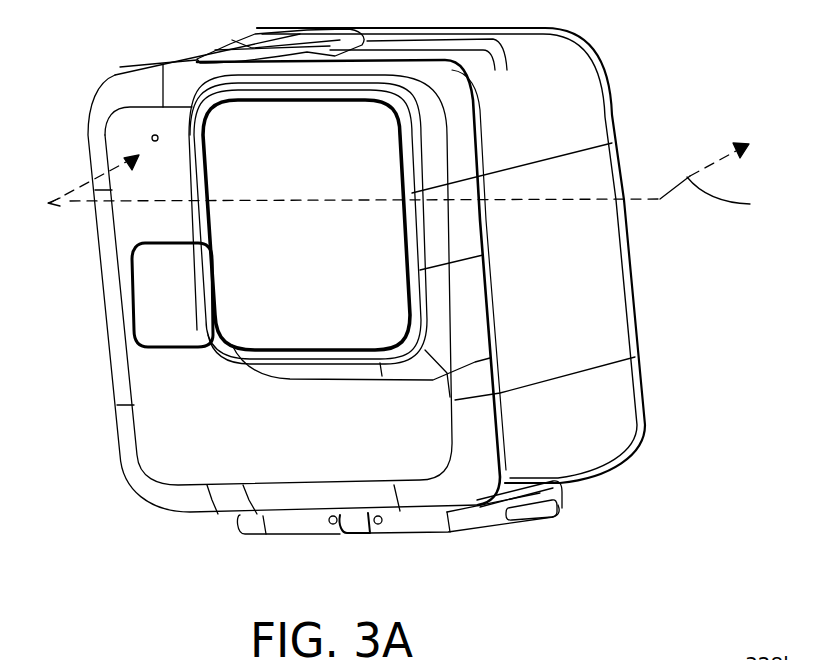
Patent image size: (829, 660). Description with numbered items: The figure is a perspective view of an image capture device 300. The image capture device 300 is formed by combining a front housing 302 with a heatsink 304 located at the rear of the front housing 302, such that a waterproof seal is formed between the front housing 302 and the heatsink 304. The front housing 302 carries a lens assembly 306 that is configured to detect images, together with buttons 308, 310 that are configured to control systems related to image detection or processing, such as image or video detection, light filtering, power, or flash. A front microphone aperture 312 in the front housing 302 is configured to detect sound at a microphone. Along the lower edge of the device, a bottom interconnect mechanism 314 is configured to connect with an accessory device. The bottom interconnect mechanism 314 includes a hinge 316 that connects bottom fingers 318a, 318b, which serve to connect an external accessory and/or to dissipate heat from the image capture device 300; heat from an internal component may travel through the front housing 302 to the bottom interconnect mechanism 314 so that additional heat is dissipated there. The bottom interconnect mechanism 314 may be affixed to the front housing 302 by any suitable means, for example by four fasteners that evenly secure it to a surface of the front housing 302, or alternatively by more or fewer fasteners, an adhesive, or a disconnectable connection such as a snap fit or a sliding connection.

The image capture device 300 is at (673, 113).
The front housing 302 is at (115, 66).
The heatsink 304 is at (644, 401).
The lens assembly 306 is at (461, 300).
The button 308 is at (236, 46).
The button 310 is at (133, 288).
The front microphone aperture 312 is at (152, 136).
The bottom interconnect mechanism 314 is at (543, 522).
The hinge 316 is at (360, 534).
The bottom finger 318a is at (467, 534).
The bottom finger 318b is at (247, 536).